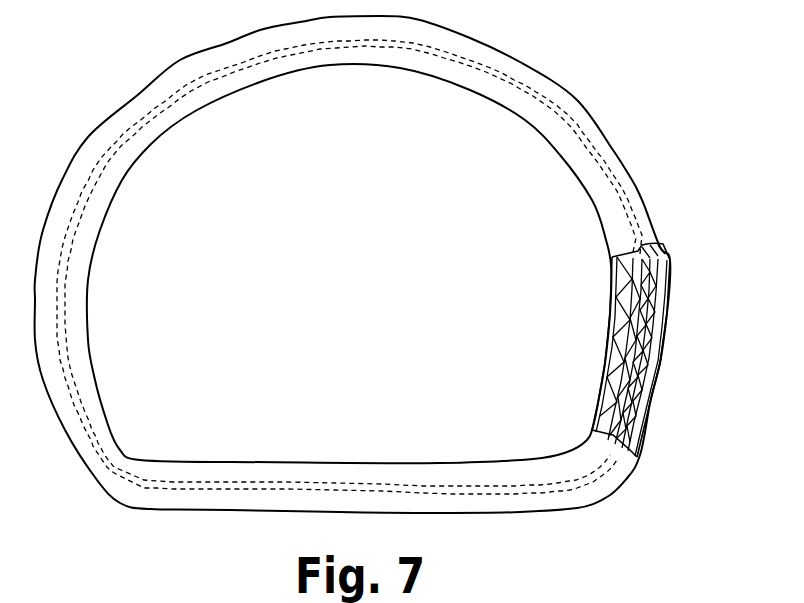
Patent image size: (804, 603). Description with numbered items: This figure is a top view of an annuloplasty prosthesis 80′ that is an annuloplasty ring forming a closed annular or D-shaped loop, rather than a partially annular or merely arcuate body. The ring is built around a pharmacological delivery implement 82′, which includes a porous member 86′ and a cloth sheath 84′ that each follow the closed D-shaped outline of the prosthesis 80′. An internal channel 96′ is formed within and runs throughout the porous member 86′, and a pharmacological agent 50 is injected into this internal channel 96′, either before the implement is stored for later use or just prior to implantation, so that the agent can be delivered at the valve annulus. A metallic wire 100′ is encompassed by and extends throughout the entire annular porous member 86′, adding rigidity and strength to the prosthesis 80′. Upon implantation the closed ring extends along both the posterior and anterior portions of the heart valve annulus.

The annuloplasty prosthesis 80′ is at (665, 113).
The pharmacological delivery implement 82′ is at (668, 264).
The cloth sheath 84′ is at (669, 291).
The metallic wire 100′ is at (642, 345).
The internal channel 96′ is at (652, 370).
The porous member 86′ is at (652, 395).
The pharmacological agent 50 is at (648, 422).